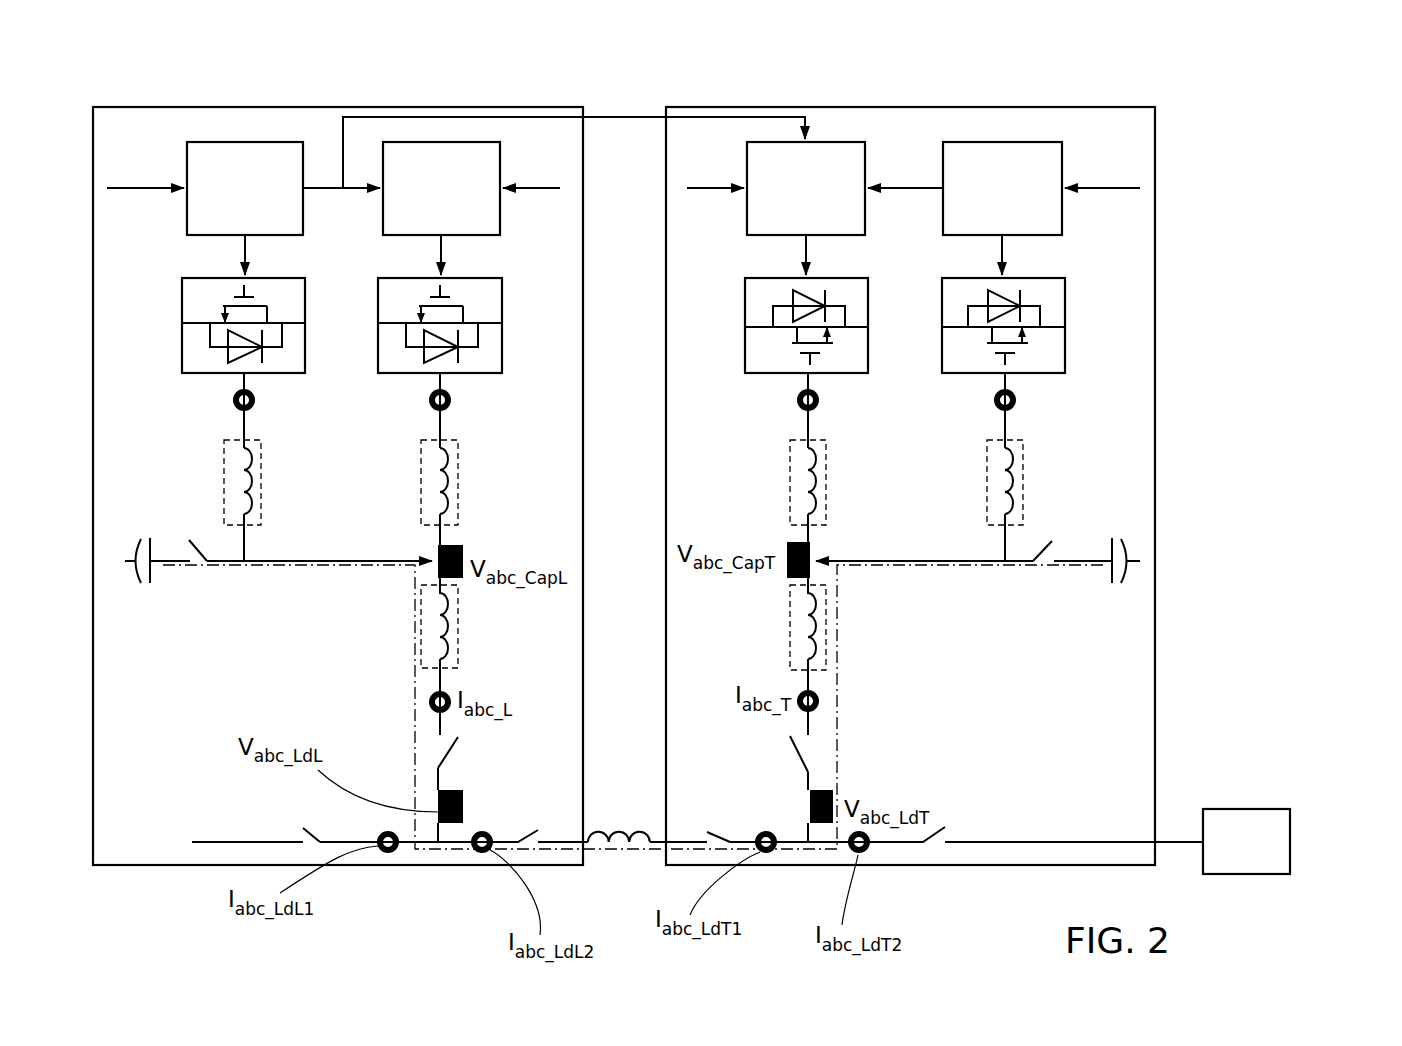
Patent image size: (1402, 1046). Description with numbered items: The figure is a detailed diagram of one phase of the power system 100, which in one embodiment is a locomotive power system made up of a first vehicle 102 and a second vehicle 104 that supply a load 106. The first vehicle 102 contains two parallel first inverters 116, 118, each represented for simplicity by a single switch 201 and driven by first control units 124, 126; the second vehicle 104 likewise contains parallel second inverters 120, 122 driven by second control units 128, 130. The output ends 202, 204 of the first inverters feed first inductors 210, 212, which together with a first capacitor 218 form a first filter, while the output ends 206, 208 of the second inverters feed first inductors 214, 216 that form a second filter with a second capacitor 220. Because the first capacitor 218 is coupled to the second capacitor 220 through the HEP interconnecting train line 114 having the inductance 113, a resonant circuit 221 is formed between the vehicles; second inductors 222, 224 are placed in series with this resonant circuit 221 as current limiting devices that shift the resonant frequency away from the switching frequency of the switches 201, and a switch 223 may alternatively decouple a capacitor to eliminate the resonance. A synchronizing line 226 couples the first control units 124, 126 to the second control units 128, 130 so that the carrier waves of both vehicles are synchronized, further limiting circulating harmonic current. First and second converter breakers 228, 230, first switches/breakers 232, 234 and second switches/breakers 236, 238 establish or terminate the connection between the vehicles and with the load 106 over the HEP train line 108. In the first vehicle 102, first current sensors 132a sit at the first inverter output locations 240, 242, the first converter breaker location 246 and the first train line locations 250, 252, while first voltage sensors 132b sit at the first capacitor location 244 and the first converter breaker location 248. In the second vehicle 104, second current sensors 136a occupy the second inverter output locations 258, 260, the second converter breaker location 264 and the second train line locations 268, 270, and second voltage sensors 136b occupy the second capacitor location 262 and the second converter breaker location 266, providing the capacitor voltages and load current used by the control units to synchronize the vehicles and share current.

The power system 100 is at (1270, 82).
The first vehicle 102 is at (93, 137).
The second vehicle 104 is at (1155, 137).
The load 106 is at (1247, 809).
The HEP train line 108 is at (225, 840).
The inductance 113 is at (603, 835).
The HEP interconnecting train line 114 is at (618, 819).
The first inverter 116 is at (182, 293).
The first inverter 118 is at (506, 293).
The second inverter 120 is at (765, 278).
The second inverter 122 is at (962, 278).
The first control unit 124 is at (245, 142).
The first control unit 126 is at (500, 165).
The second control unit 128 is at (830, 142).
The second control unit 130 is at (995, 142).
The first current sensor 132a is at (342, 648).
The first voltage sensor 132b is at (451, 672).
The second current sensor 136a is at (906, 642).
The second voltage sensor 136b is at (795, 670).
The switch 201 is at (406, 338).
The output end 202 is at (232, 378).
The output end 204 is at (450, 378).
The output end 206 is at (800, 380).
The output end 208 is at (1012, 380).
The first inductor 210 is at (262, 480).
The first inductor 212 is at (458, 480).
The first inductor 214 is at (790, 468).
The first inductor 216 is at (987, 468).
The first capacitor 218 is at (138, 545).
The second capacitor 220 is at (1112, 580).
The resonant circuit 221 is at (415, 653).
The second inductor 222 is at (458, 625).
The switch 223 is at (190, 540).
The second inductor 224 is at (790, 645).
The synchronizing line 226 is at (625, 117).
The first converter breaker 228 is at (460, 740).
The second converter breaker 230 is at (796, 750).
The first switch/breaker 232 is at (315, 828).
The first switch/breaker 234 is at (528, 838).
The second switch/breaker 236 is at (722, 838).
The second switch/breaker 238 is at (938, 830).
The first inverter output location 240 is at (231, 411).
The first inverter output location 242 is at (428, 411).
The first capacitor location 244 is at (430, 573).
The first converter breaker location 246 is at (428, 708).
The first converter breaker location 248 is at (410, 793).
The first train line location 250 is at (397, 855).
The first train line location 252 is at (481, 856).
The second inverter output location 258 is at (822, 407).
The second inverter output location 260 is at (1020, 403).
The second capacitor location 262 is at (783, 548).
The second converter breaker location 264 is at (823, 703).
The second converter breaker location 266 is at (806, 811).
The second train line location 268 is at (776, 856).
The second train line location 270 is at (870, 856).